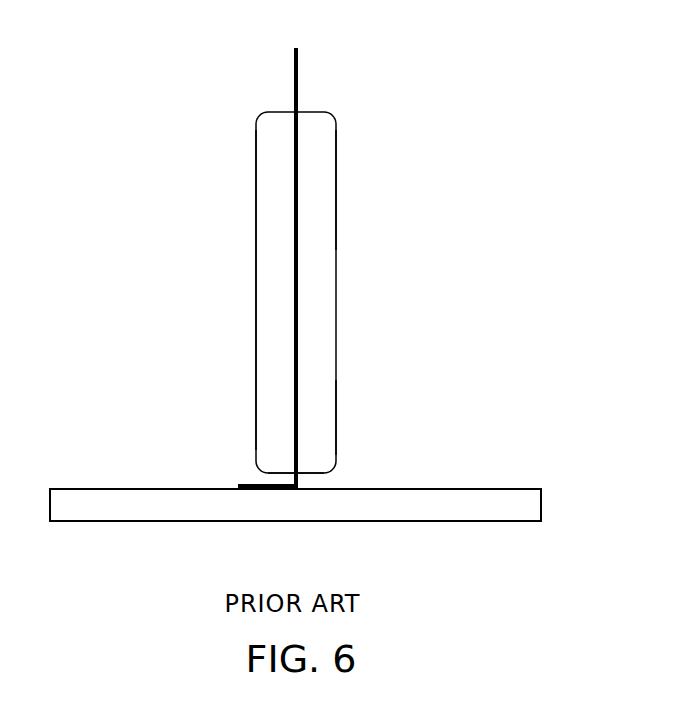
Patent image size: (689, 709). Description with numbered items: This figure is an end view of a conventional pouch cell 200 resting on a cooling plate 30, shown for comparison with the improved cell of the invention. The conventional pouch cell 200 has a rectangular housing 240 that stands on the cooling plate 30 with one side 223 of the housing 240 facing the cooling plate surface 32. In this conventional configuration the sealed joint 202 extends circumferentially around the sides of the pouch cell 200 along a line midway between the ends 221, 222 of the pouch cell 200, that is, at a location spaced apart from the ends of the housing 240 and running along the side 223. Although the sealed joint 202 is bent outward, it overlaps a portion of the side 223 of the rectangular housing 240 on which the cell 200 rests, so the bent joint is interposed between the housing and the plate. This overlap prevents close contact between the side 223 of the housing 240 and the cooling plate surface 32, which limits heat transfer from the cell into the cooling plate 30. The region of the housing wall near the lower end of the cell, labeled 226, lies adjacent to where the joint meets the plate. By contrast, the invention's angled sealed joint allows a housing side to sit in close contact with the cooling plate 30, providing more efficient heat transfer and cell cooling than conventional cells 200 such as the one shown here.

The conventional pouch cell 200 is at (124, 84).
The end of the pouch cell 221 is at (338, 308).
The rectangular housing 240 is at (338, 224).
The end of the pouch cell 222 is at (254, 265).
The lower housing portion 226 is at (323, 420).
The side of the rectangular housing 223 is at (316, 475).
The sealed joint 202 is at (265, 486).
The cooling plate 30 is at (481, 514).
The cooling plate surface 32 is at (419, 489).